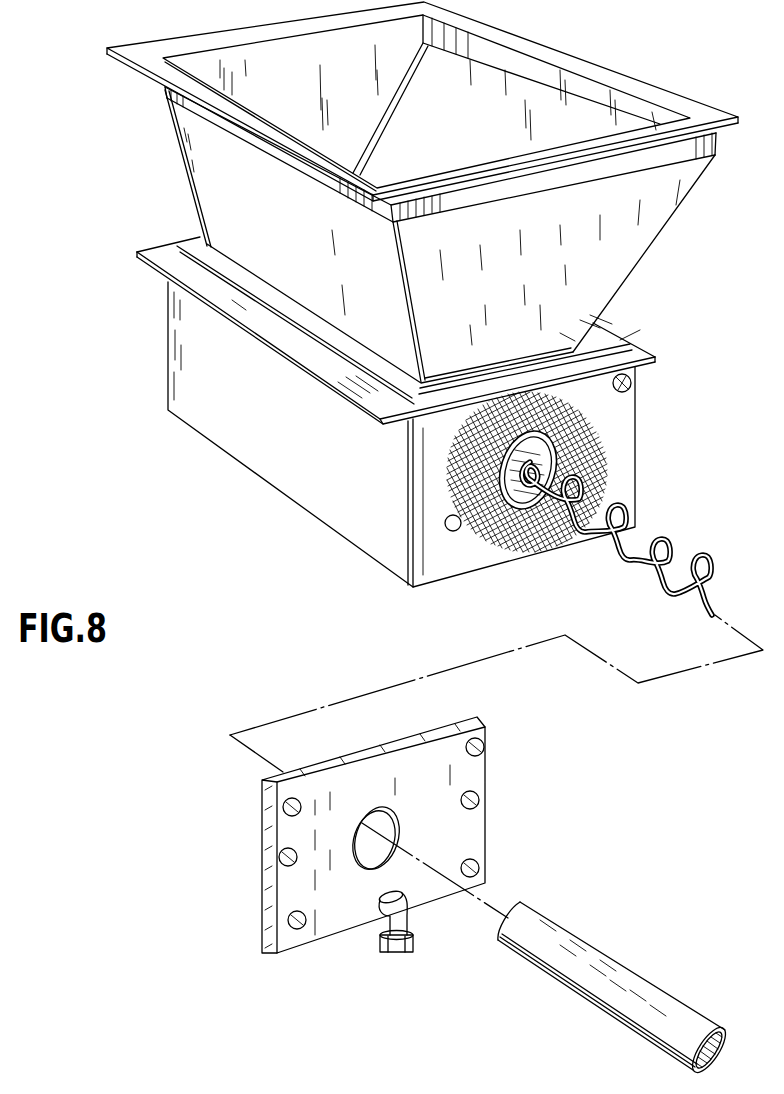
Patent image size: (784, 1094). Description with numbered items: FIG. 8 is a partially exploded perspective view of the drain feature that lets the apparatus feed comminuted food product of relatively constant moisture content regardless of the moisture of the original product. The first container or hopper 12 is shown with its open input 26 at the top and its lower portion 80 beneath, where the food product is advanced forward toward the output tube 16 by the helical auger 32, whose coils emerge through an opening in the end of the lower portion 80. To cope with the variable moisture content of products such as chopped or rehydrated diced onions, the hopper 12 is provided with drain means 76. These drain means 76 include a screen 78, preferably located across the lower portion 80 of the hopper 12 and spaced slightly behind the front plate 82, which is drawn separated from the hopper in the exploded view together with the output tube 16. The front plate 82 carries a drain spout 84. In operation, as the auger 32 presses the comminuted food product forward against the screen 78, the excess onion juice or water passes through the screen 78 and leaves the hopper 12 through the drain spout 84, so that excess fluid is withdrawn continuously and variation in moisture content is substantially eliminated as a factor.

The first container or hopper 12 is at (422, 192).
The open input 26 is at (490, 82).
The lower portion 80 is at (396, 425).
The screen 78 is at (527, 540).
The first helical auger 32 is at (662, 533).
The drain means 76 is at (353, 570).
The front plate 82 is at (320, 933).
The drain spout 84 is at (407, 950).
The output tube 16 is at (575, 938).